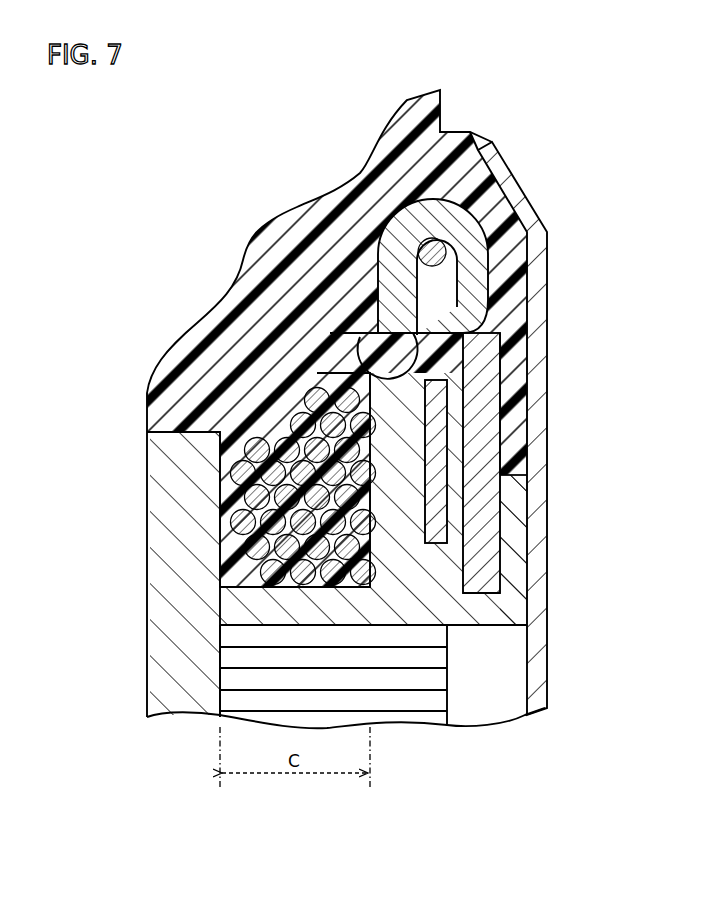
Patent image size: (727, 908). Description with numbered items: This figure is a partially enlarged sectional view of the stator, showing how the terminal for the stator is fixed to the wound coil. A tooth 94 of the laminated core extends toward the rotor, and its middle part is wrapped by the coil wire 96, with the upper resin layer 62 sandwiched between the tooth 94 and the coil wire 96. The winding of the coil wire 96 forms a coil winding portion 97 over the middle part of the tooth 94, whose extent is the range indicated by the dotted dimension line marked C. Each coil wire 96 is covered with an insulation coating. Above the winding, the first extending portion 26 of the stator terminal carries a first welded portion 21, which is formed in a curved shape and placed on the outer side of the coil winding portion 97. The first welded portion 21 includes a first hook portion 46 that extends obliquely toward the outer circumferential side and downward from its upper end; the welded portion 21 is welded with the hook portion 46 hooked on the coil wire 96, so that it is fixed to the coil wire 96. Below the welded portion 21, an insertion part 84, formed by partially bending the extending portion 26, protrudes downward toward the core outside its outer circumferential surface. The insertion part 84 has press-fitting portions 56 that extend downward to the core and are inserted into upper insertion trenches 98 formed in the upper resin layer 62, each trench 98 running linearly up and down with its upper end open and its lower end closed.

The first welded portion 21 is at (408, 220).
The first extending portion 26 is at (367, 347).
The coil winding portion 97 is at (296, 398).
The coil wire 96 is at (240, 474).
The first hook portion 46 is at (527, 270).
The insertion part 84 is at (500, 430).
The press-fitting portion 56 is at (505, 449).
The upper insertion trench 98 is at (488, 500).
The upper resin layer 62 is at (427, 608).
The tooth 94 is at (410, 680).